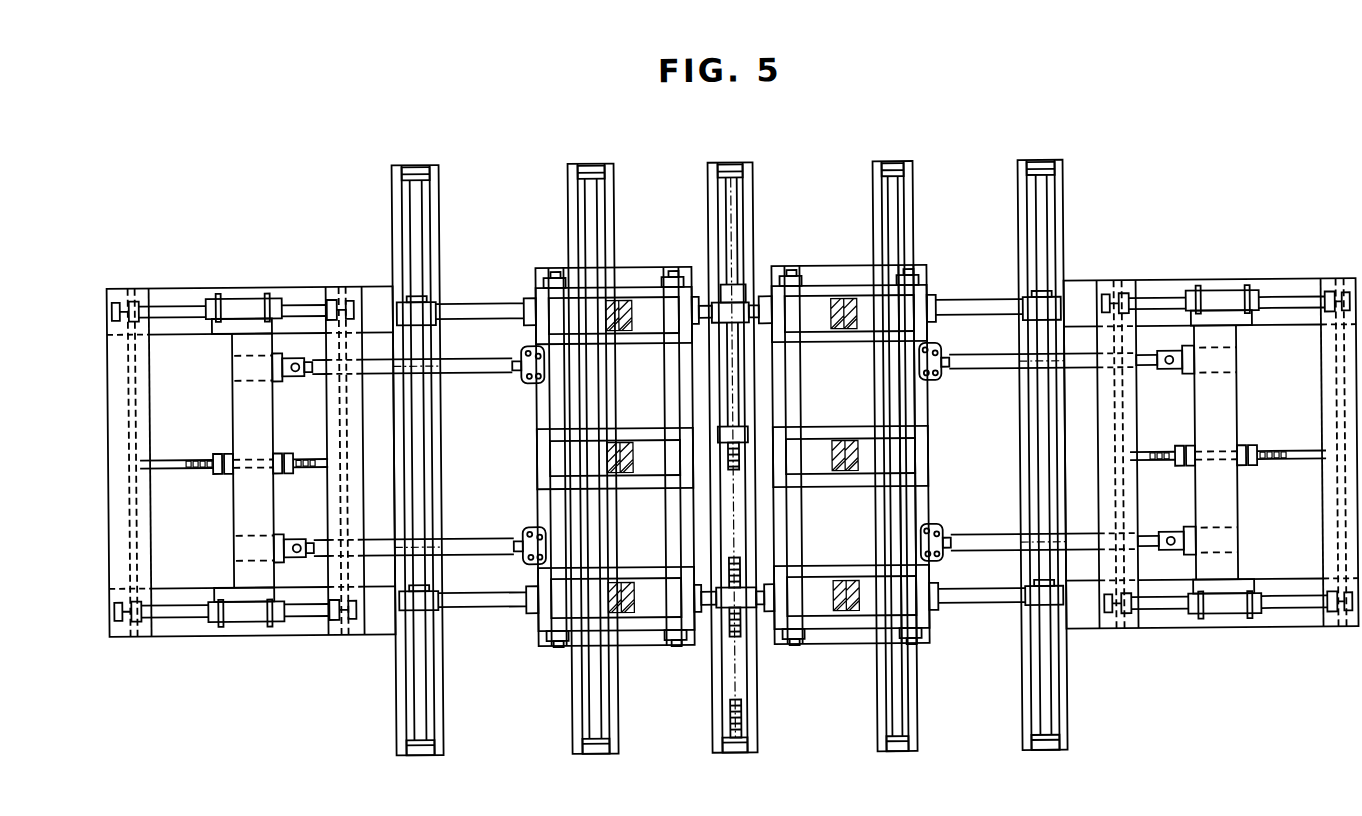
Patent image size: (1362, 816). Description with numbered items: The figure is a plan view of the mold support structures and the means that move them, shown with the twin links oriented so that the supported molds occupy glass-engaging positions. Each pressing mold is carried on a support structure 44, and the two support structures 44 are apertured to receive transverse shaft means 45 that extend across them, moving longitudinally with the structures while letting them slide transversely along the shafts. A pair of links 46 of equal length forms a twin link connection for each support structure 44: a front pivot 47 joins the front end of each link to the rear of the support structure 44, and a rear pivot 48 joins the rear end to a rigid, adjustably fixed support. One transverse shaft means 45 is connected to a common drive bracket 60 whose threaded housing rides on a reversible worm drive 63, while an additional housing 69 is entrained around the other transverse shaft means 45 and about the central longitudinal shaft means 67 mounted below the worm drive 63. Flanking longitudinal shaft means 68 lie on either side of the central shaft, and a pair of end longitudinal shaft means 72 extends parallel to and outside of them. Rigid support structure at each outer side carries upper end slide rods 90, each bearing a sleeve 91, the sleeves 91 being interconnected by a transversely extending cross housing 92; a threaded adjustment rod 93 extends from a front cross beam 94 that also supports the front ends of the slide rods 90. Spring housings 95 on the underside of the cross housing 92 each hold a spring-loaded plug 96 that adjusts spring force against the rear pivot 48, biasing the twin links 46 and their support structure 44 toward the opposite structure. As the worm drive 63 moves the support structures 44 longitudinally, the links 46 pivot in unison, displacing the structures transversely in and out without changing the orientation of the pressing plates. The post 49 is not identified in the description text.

The support structure 44 is at (641, 267).
The transverse shaft means 45 is at (482, 302).
The links 46 is at (461, 371).
The front pivot 47 is at (533, 382).
The rear pivot 48 is at (294, 540).
The frame post 49 is at (327, 337).
The common drive bracket 60 is at (724, 610).
The worm drive 63 is at (728, 452).
The central longitudinal shaft means 67 is at (735, 250).
The flanking longitudinal shaft means 68 is at (597, 715).
The additional housing 69 is at (717, 290).
The end longitudinal shaft means 72 is at (420, 717).
The upper end slide rods 90 is at (188, 306).
The sleeve 91 is at (246, 295).
The cross housing 92 is at (267, 440).
The threaded adjustment rod 93 is at (178, 456).
The front cross beam 94 is at (362, 415).
The spring housing 95 is at (252, 356).
The spring-loaded plug 96 is at (283, 375).